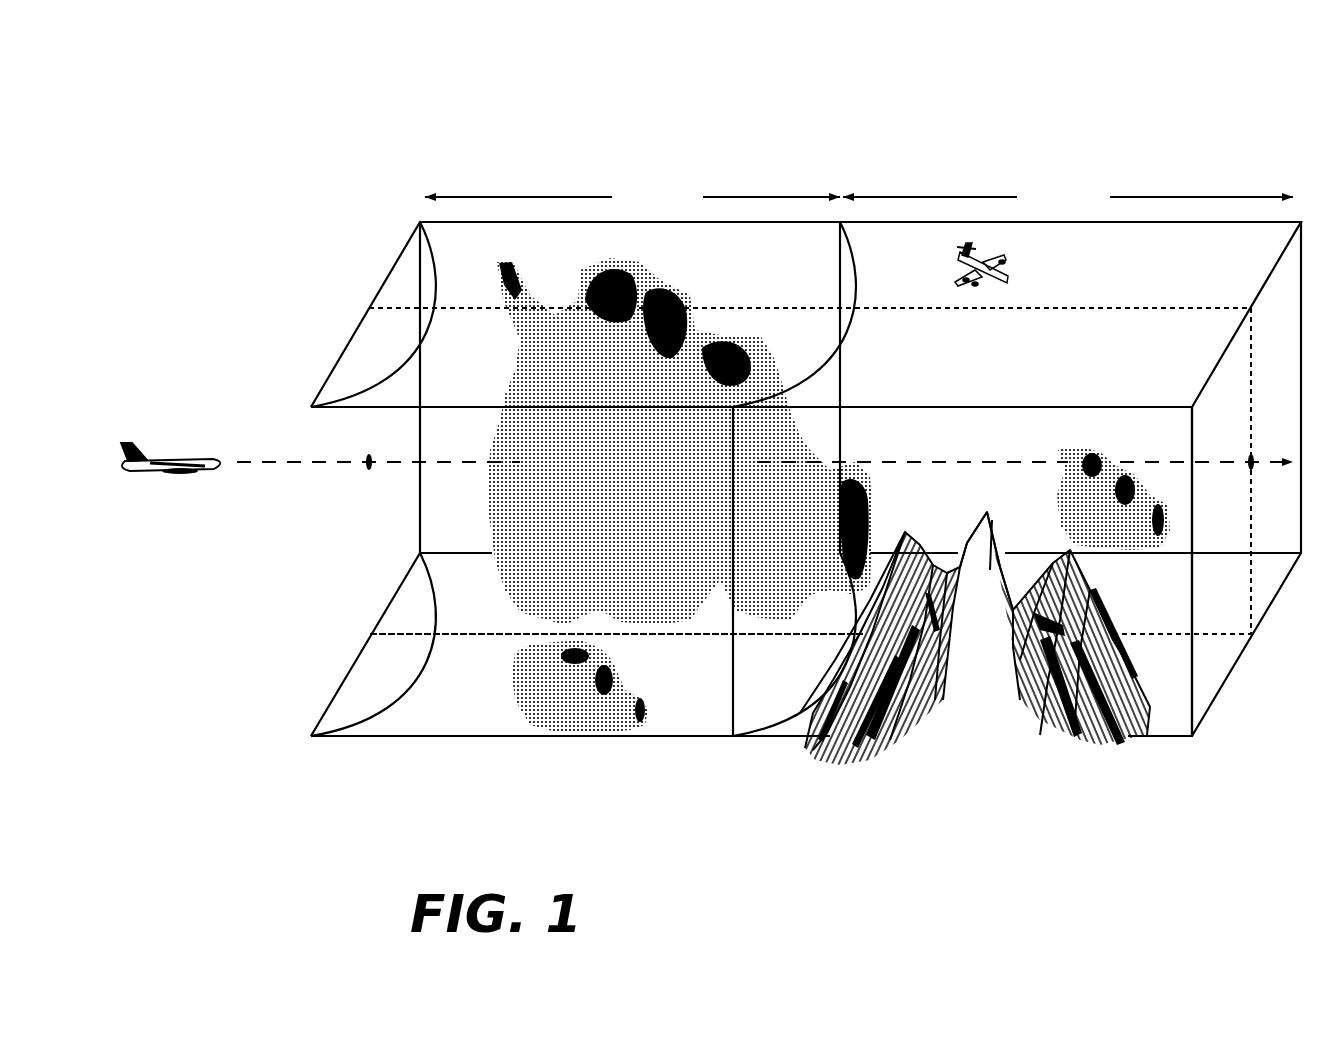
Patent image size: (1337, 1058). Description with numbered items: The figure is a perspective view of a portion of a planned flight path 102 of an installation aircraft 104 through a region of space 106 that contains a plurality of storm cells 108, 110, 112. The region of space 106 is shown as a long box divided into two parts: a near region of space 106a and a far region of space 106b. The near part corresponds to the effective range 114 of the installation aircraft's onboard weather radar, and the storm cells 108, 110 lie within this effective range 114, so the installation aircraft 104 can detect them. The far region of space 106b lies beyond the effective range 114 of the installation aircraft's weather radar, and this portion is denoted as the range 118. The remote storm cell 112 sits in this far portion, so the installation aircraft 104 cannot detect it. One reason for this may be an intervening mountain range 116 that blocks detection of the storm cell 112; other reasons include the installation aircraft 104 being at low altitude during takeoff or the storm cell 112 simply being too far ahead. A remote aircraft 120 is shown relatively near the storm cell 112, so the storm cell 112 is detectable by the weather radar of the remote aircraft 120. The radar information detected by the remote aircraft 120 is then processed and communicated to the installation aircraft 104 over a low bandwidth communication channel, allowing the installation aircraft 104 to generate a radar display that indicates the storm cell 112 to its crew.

The planned flight path 102 is at (270, 466).
The installation aircraft 104 is at (151, 498).
The region of space 106 is at (778, 128).
The region of space 106a is at (606, 178).
The region of space 106b is at (1012, 175).
The storm cell 108 is at (528, 363).
The storm cell 110 is at (626, 670).
The remote storm cell 112 is at (1121, 430).
The effective range 114 is at (632, 198).
The mountain range 116 is at (992, 750).
The range 118 is at (1068, 198).
The remote aircraft 120 is at (1018, 271).